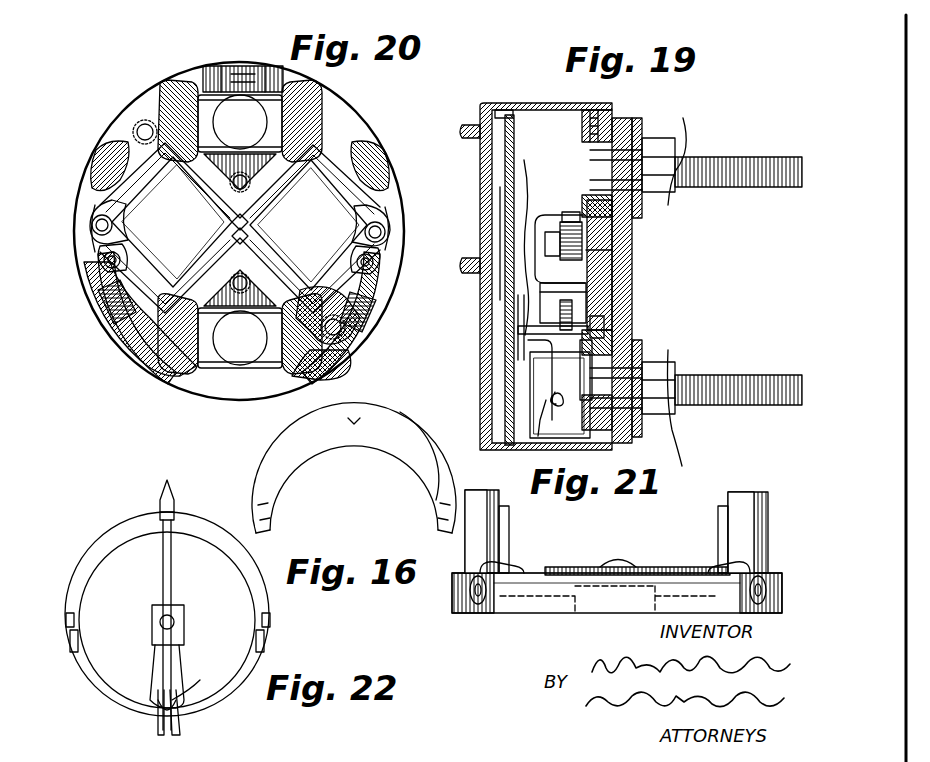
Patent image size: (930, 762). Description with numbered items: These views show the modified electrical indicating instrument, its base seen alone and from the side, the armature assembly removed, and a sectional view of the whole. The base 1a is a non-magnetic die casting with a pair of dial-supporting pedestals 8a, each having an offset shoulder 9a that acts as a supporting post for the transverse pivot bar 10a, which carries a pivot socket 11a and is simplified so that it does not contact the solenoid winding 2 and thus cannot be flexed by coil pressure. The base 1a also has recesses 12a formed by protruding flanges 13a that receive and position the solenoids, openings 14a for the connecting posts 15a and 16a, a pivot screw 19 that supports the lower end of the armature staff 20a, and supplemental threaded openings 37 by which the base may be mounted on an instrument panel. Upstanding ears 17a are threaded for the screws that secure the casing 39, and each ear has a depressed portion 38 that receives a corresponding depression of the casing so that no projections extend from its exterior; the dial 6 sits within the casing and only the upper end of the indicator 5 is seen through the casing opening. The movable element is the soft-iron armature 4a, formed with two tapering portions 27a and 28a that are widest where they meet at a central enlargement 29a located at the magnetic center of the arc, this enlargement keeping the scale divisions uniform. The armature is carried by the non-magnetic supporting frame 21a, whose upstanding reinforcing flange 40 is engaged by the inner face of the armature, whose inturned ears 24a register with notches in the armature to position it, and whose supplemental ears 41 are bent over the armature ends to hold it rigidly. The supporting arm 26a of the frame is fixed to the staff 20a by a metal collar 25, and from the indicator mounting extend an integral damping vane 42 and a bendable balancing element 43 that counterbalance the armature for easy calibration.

In FIG. 20, the base 1a is at (362, 126).
In FIG. 19, the base 1a is at (618, 276).
In FIG. 21, the base 1a is at (530, 613).
In FIG. 19, the solenoid winding 2 is at (600, 298).
In FIG. 19, the armature 4a is at (584, 246).
In FIG. 22, the armature 4a is at (100, 552).
In FIG. 16, the armature 4a is at (396, 432).
In FIG. 19, the indicator 5 is at (480, 195).
In FIG. 22, the indicator 5 is at (174, 584).
In FIG. 19, the dial 6 is at (514, 170).
In FIG. 20, the dial-supporting pedestal 8a is at (90, 262).
In FIG. 19, the dial-supporting pedestal 8a is at (530, 240).
In FIG. 21, the dial-supporting pedestal 8a is at (478, 488).
In FIG. 20, the offset shoulder 9a is at (396, 262).
In FIG. 21, the offset shoulder 9a is at (510, 506).
In FIG. 19, the transverse pivot bar 10a is at (518, 332).
In FIG. 19, the pivot socket 11a is at (540, 346).
In FIG. 20, the recess 12a is at (239, 223).
In FIG. 20, the protruding flange 13a is at (250, 204).
In FIG. 19, the protruding flange 13a is at (612, 252).
In FIG. 21, the protruding flange 13a is at (646, 566).
In FIG. 19, the opening 14a is at (630, 130).
In FIG. 19, the connecting post 15a is at (734, 157).
In FIG. 19, the connecting post 16a is at (740, 376).
In FIG. 20, the ear 17a is at (392, 292).
In FIG. 19, the ear 17a is at (582, 134).
In FIG. 21, the ear 17a is at (508, 564).
In FIG. 19, the pivot screw 19 is at (606, 326).
In FIG. 19, the armature staff 20a is at (530, 420).
In FIG. 22, the supporting frame 21a is at (180, 690).
In FIG. 22, the inturned ear 24a is at (66, 616).
In FIG. 19, the metal collar 25 is at (575, 314).
In FIG. 19, the supporting arm 26a is at (586, 430).
In FIG. 22, the supporting arm 26a is at (202, 690).
In FIG. 22, the tapering portion 27a is at (82, 582).
In FIG. 16, the tapering portion 27a is at (278, 462).
In FIG. 16, the tapering portion 28a is at (434, 480).
In FIG. 22, the central enlargement 29a is at (158, 510).
In FIG. 16, the central enlargement 29a is at (356, 416).
In FIG. 20, the supplemental threaded opening 37 is at (128, 130).
In FIG. 20, the depressed portion 38 is at (246, 66).
In FIG. 19, the depressed portion 38 is at (586, 108).
In FIG. 21, the depressed portion 38 is at (470, 576).
In FIG. 19, the casing 39 is at (522, 102).
In FIG. 22, the reinforcing flange 40 is at (180, 650).
In FIG. 22, the supplemental ear 41 is at (70, 644).
In FIG. 19, the damping vane 42 is at (536, 440).
In FIG. 22, the damping vane 42 is at (158, 730).
In FIG. 19, the balancing element 43 is at (552, 420).
In FIG. 22, the balancing element 43 is at (176, 722).